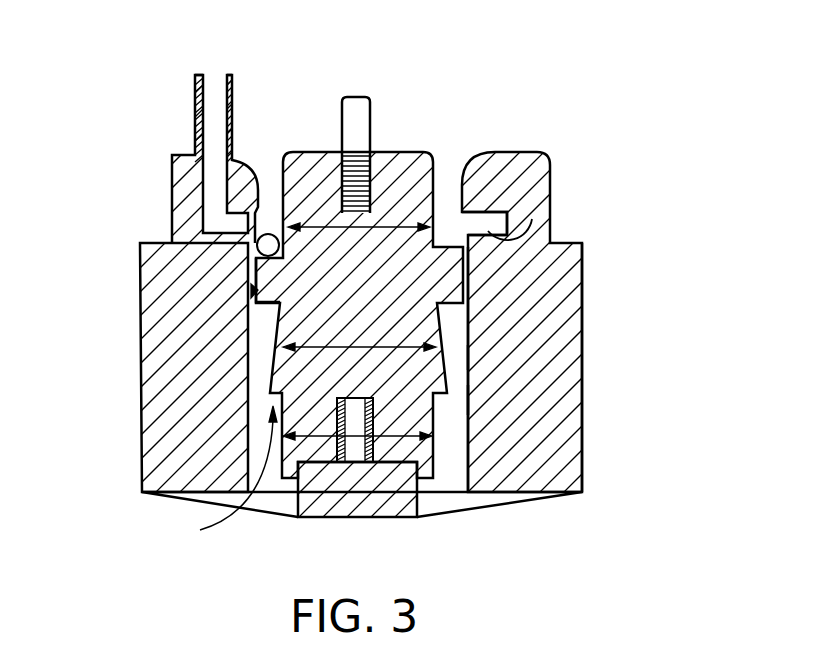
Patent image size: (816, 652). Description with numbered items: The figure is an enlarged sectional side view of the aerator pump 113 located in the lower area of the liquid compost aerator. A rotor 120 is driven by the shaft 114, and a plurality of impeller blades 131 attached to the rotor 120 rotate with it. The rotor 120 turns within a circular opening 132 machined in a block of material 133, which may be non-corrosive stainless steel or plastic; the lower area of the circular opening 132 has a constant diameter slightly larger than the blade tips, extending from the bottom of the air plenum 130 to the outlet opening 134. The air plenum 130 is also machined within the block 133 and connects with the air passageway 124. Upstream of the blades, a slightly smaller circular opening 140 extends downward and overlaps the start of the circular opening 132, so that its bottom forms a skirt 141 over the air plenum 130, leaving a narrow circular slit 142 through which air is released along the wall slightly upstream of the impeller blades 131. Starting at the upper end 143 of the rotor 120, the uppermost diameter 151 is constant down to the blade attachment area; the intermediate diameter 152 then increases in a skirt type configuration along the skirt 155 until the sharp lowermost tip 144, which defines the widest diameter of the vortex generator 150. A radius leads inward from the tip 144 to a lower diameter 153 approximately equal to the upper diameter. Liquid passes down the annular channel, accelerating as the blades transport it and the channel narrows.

The aerator pump 113 is at (597, 150).
The shaft 114 is at (372, 118).
The rotor 120 is at (458, 240).
The air passageway 124 is at (233, 90).
The air plenum 130 is at (555, 246).
The impeller blades 131 is at (473, 322).
The circular opening 132 is at (253, 352).
The block of material 133 is at (583, 432).
The outlet opening 134 is at (280, 494).
The circular opening 140 is at (262, 228).
The skirt 141 is at (262, 279).
The circular slit 142 is at (258, 256).
The upper end 143 is at (437, 200).
The tip 144 is at (473, 398).
The vortex generator 150 is at (210, 479).
The uppermost diameter 151 is at (256, 303).
The intermediate diameter 152 is at (473, 357).
The lower diameter 153 is at (355, 440).
The skirt 155 is at (390, 363).